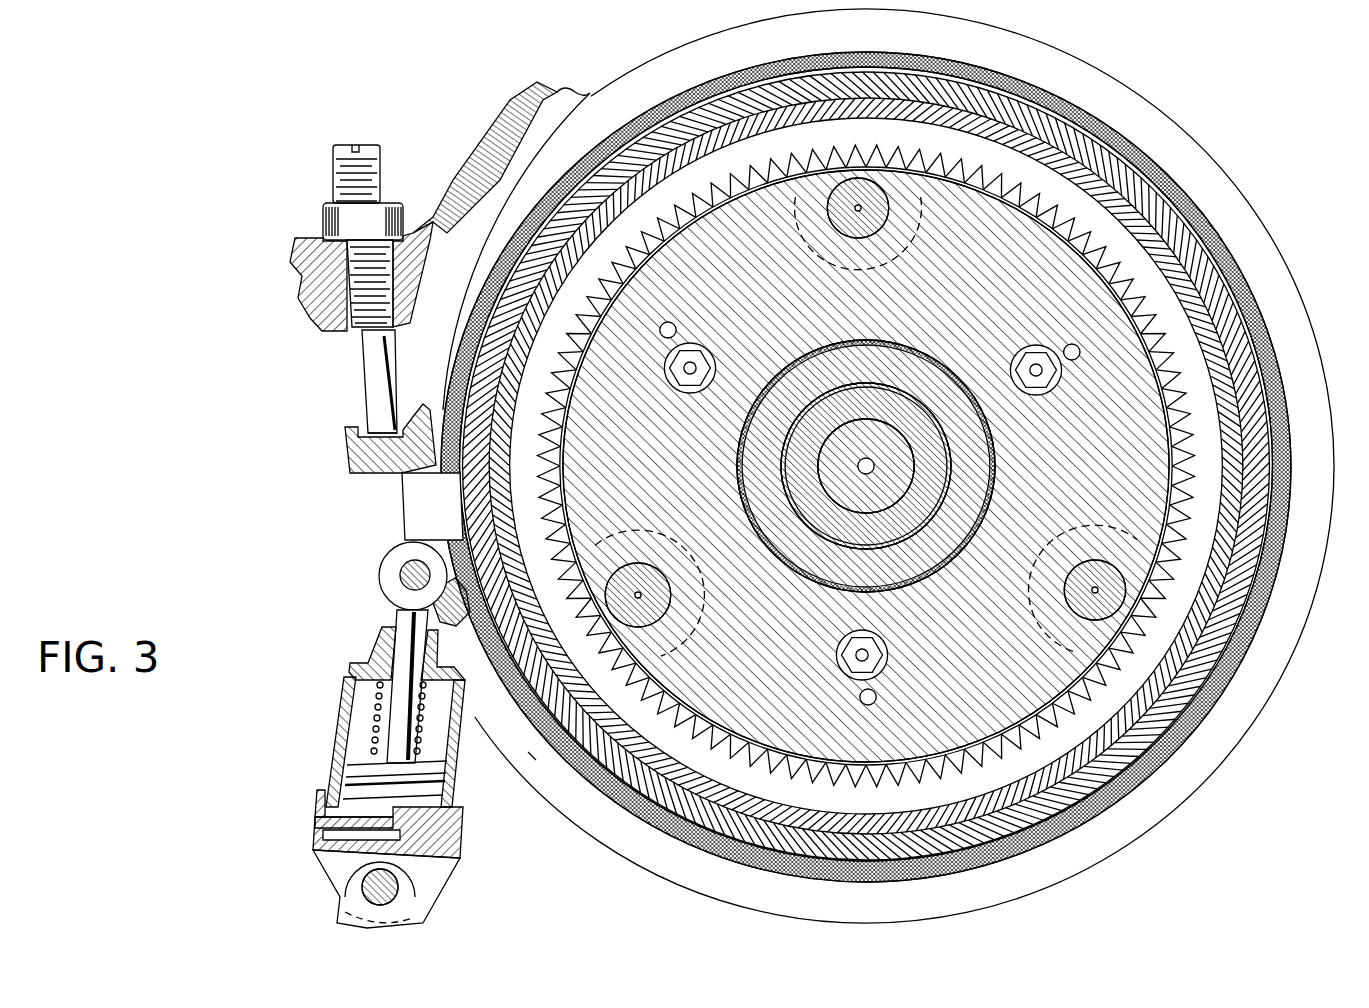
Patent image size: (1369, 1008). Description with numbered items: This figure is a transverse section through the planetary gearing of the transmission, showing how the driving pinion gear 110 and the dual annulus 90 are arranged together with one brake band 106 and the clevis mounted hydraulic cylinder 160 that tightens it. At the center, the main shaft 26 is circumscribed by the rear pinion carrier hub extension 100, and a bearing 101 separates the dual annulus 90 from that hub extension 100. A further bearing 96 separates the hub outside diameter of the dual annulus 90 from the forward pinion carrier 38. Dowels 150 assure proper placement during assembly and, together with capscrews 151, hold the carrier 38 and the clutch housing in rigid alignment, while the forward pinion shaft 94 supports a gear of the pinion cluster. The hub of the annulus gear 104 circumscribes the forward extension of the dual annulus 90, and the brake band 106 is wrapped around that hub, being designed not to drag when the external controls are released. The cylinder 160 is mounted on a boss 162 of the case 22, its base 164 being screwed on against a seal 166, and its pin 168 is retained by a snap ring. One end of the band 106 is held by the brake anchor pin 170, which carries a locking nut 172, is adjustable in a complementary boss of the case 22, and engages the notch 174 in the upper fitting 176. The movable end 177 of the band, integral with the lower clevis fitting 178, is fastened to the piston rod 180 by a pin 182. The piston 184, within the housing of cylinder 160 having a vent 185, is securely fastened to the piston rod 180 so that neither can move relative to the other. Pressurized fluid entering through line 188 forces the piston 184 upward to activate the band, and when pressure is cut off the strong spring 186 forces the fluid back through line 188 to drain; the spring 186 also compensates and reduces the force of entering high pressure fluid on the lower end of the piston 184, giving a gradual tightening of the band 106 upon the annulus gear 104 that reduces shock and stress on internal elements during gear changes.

The case 22 is at (330, 289).
The main shaft 26 is at (866, 466).
The forward pinion carrier 38 is at (866, 466).
The dual annulus 90 is at (1207, 800).
The forward pinion shaft 94 is at (1096, 578).
The bearing 96 is at (988, 520).
The rear pinion carrier hub extension 100 is at (866, 466).
The bearing 101 is at (914, 522).
The annulus gear 104 is at (1052, 790).
The brake band 106 is at (1032, 812).
The driving pinion gear 110 is at (1150, 624).
The dowels 150 is at (878, 697).
The capscrews 151 is at (848, 668).
The clevis mounted hydraulic cylinder 160 is at (449, 737).
The boss 162 is at (340, 914).
The base 164 is at (462, 856).
The seal 166 is at (335, 816).
The pin 168 is at (362, 887).
The brake anchor pin 170 is at (380, 350).
The locking nut 172 is at (355, 232).
The notch 174 is at (358, 430).
The upper fitting 176 is at (347, 458).
The movable end 177 is at (455, 540).
The lower clevis fitting 178 is at (528, 752).
The piston rod 180 is at (400, 612).
The pin 182 is at (405, 572).
The piston 184 is at (352, 776).
The vent 185 is at (378, 688).
The strong spring 186 is at (372, 714).
The line 188 is at (330, 835).